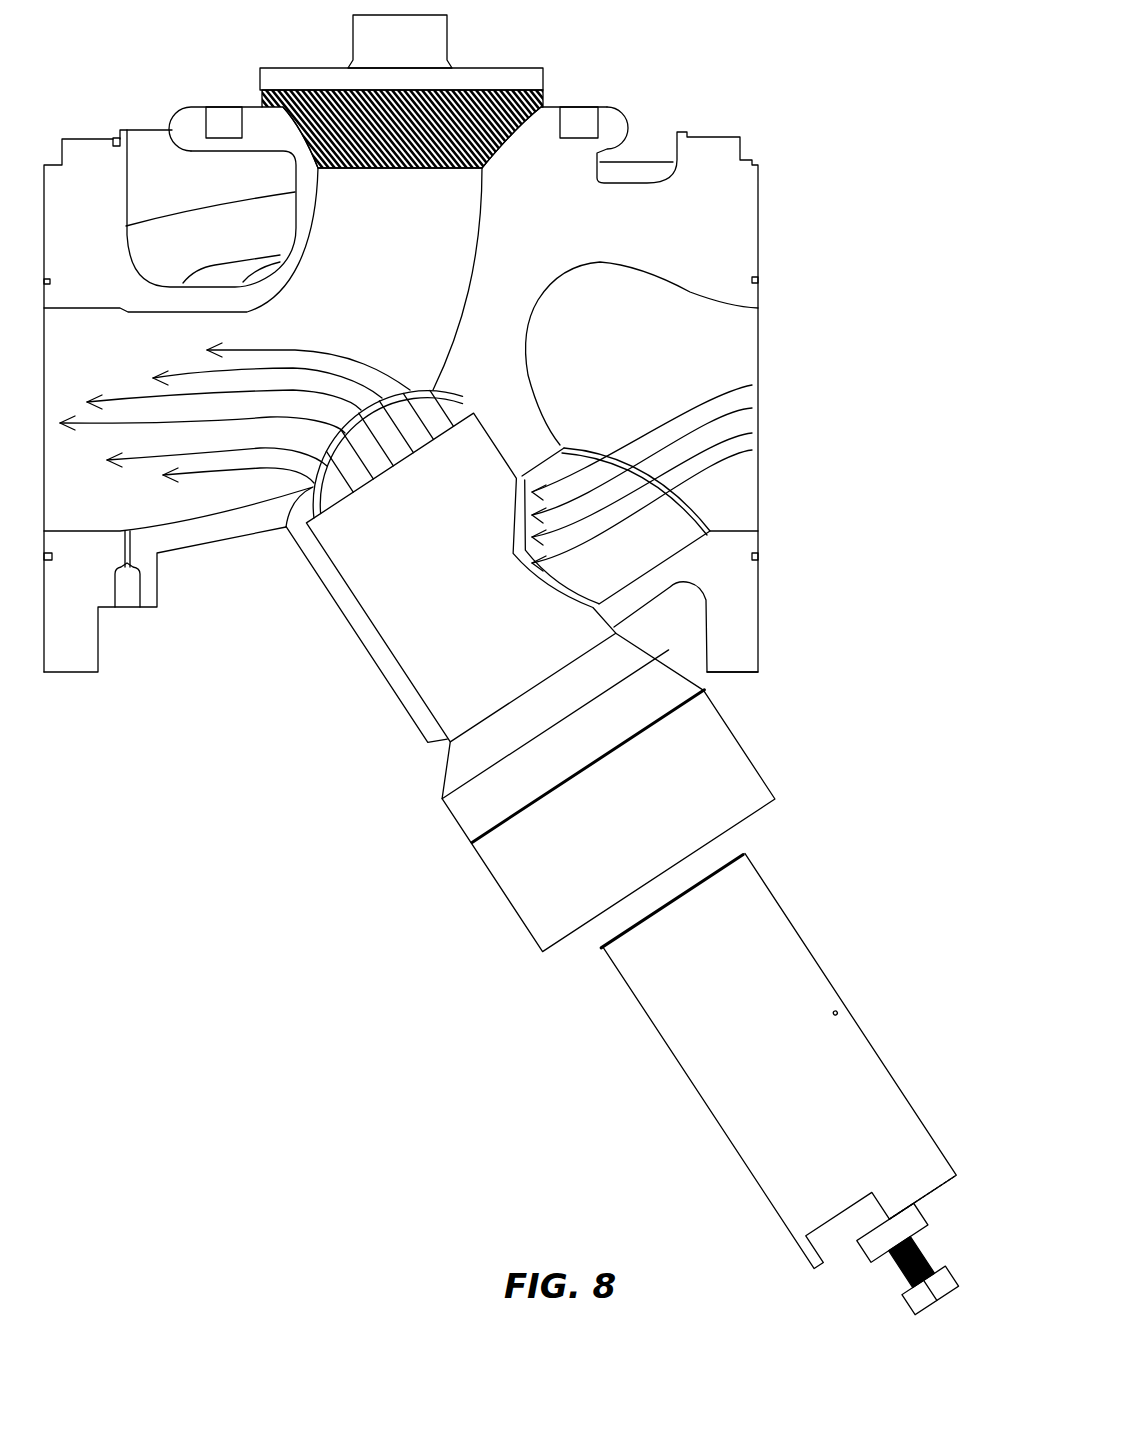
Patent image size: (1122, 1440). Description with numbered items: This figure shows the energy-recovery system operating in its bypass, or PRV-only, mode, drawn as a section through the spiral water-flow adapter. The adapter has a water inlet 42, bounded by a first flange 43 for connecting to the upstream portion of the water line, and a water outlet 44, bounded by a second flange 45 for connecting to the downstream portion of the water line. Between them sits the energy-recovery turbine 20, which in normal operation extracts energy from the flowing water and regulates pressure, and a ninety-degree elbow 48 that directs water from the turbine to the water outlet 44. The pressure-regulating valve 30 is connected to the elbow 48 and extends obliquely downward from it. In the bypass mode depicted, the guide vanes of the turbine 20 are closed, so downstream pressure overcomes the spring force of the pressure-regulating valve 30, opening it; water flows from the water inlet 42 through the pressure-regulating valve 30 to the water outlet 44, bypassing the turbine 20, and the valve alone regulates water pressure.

The energy-recovery turbine 20 is at (720, 150).
The pressure-regulating valve (PRV) 30 is at (782, 972).
The water inlet 42 is at (720, 362).
The first flange 43 is at (743, 640).
The water outlet 44 is at (87, 497).
The second flange 45 is at (75, 660).
The 90-degree elbow 48 is at (391, 288).